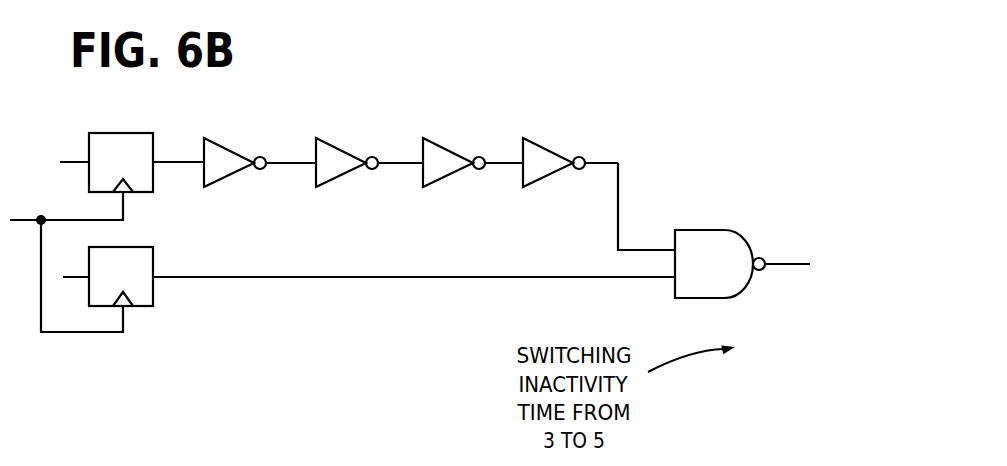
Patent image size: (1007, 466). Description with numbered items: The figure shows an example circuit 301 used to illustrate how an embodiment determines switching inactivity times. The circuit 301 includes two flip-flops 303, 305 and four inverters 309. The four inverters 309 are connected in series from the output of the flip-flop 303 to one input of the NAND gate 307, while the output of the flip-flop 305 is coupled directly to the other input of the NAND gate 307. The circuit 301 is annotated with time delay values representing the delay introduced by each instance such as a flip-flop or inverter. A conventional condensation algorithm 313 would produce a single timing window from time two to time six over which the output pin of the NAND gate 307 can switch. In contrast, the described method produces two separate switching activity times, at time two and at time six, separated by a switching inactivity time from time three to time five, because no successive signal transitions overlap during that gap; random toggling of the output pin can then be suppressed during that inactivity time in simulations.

The circuit 301 is at (455, 76).
The flip-flop 303 is at (133, 133).
The flip-flop 305 is at (135, 307).
The NAND gate 307 is at (725, 300).
The four inverters 309 is at (585, 217).
The conventional condensation algorithm 313 is at (755, 217).